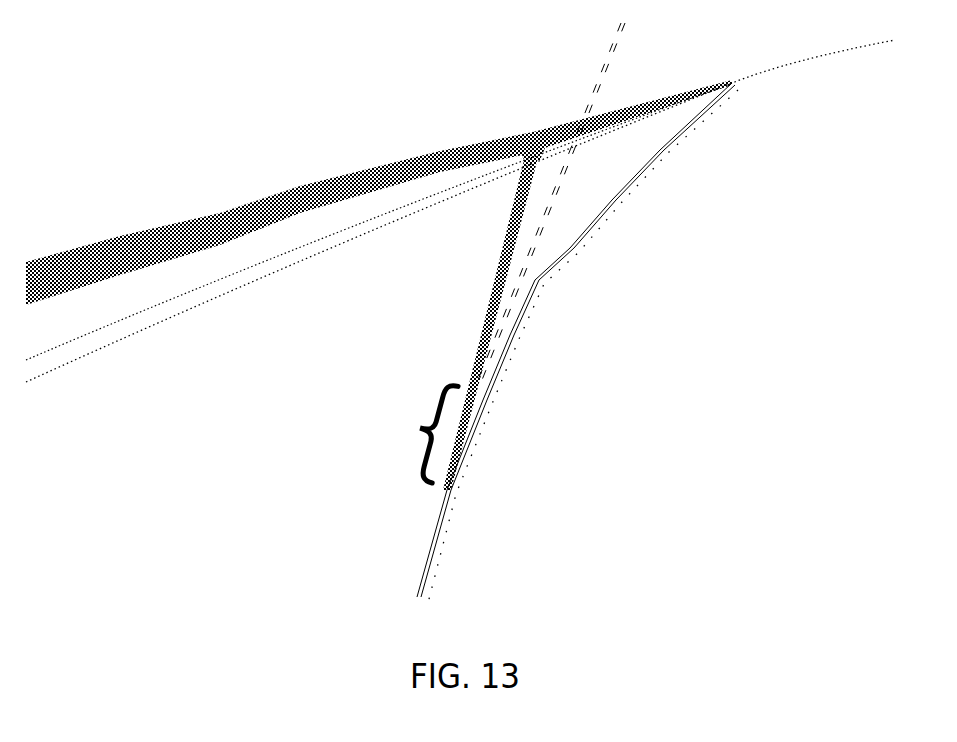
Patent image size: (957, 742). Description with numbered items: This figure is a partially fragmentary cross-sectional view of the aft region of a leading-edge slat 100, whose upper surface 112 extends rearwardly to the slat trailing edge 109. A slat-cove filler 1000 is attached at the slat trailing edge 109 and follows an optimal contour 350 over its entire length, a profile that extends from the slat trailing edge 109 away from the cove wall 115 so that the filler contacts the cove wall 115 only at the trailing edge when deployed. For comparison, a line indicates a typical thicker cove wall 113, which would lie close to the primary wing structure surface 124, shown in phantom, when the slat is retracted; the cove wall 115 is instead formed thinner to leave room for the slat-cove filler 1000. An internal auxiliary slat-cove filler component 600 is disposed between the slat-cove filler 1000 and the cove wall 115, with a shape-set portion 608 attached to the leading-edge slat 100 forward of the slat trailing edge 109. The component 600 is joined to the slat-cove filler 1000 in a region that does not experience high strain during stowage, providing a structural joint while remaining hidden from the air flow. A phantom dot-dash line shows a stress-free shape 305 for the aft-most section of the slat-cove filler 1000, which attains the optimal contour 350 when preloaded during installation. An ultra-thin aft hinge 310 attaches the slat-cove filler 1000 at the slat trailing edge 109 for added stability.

The leading-edge slat 100 is at (379, 285).
The upper surface 112 is at (315, 182).
The thicker cove wall 113 is at (300, 238).
The cove wall 115 is at (233, 232).
The primary wing structure surface 124 is at (188, 305).
The shape-set portion 608 is at (533, 153).
The internal auxiliary slat-cove filler component 600 is at (503, 248).
The stress-free shape 305 is at (611, 65).
The slat trailing edge 109 is at (734, 80).
The aft hinge 310 is at (720, 97).
The optimal contour 350 is at (608, 213).
The slat-cove filler 1000 is at (462, 453).